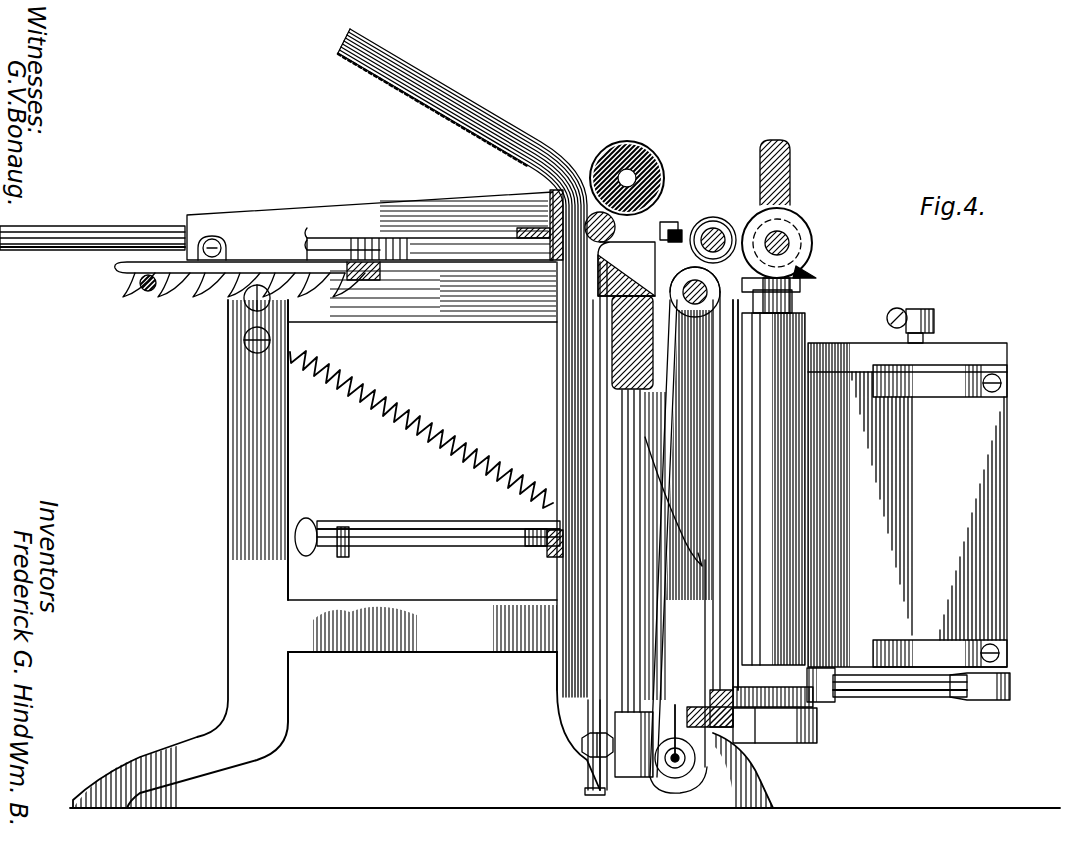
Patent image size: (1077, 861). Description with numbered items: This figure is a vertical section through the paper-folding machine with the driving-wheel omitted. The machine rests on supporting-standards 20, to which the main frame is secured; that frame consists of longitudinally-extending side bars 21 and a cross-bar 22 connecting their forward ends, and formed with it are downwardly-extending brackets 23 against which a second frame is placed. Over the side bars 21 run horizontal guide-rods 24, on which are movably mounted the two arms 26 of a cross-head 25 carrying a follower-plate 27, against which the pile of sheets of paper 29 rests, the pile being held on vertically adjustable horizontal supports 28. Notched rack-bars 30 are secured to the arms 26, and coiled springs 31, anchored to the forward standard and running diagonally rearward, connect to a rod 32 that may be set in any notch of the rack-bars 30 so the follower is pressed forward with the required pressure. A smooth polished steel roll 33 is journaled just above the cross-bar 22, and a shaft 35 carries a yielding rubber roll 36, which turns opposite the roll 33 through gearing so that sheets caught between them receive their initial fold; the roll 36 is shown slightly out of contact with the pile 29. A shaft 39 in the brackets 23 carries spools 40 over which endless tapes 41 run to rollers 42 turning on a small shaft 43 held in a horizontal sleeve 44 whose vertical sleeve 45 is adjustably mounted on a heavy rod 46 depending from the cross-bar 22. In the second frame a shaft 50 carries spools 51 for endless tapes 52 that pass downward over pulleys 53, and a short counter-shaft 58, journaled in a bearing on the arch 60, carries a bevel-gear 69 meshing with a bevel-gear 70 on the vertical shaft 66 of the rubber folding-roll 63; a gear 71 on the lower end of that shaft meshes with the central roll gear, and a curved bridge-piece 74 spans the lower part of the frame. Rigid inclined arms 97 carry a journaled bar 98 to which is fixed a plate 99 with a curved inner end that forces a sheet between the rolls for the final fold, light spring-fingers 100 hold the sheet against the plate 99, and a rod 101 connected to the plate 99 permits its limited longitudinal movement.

The supporting-standards 20 is at (288, 686).
The side bars 21 is at (476, 298).
The cross-bar 22 is at (612, 352).
The downwardly-extending brackets 23 is at (700, 585).
The guide-rods 24 is at (123, 240).
The cross-head 25 is at (553, 190).
The arms 26 is at (268, 222).
The follower-plate 27 is at (463, 99).
The horizontal supports 28 is at (354, 523).
The pile of sheets of paper 29 is at (527, 127).
The rack-bars 30 is at (113, 268).
The coiled springs 31 is at (382, 418).
The rod 32 is at (148, 291).
The roll 33 is at (650, 218).
The shaft 35 is at (624, 152).
The roll 36 is at (648, 157).
The shaft 39 is at (693, 306).
The spools 40 is at (705, 295).
The endless tapes 41 is at (703, 566).
The rollers or pulleys 42 is at (690, 766).
The small shaft 43 is at (675, 715).
The horizontal sleeve 44 is at (643, 778).
The vertical sleeve 45 is at (617, 766).
The heavy rod 46 is at (633, 607).
The shaft 50 is at (727, 224).
The spools 51 is at (704, 229).
The endless tapes 52 is at (688, 244).
The pulleys or rollers 53 is at (715, 660).
The counter-shaft 58 is at (790, 243).
The arch 60 is at (790, 178).
The folding-roll 63 is at (788, 333).
The vertical shaft 66 is at (790, 300).
The bevel-gear 69 is at (790, 226).
The bevel-gear 70 is at (812, 273).
The gear 71 is at (757, 685).
The curved bridge-piece 74 is at (735, 742).
The arms 97 is at (935, 686).
The bar 98 is at (1002, 676).
The plate 99 is at (993, 466).
The spring-fingers 100 is at (953, 382).
The rod 101 is at (897, 315).